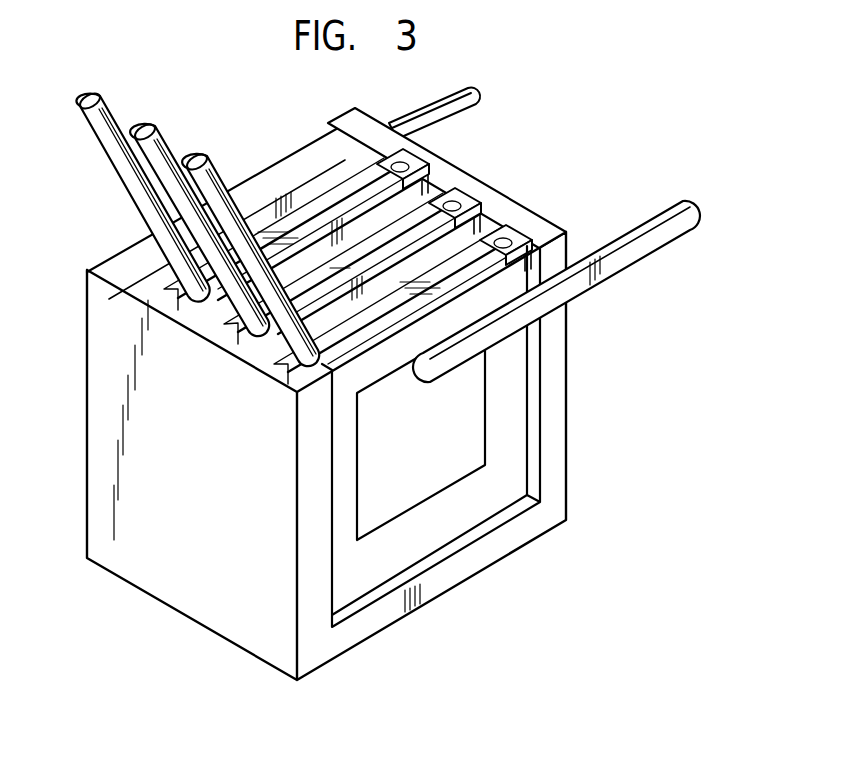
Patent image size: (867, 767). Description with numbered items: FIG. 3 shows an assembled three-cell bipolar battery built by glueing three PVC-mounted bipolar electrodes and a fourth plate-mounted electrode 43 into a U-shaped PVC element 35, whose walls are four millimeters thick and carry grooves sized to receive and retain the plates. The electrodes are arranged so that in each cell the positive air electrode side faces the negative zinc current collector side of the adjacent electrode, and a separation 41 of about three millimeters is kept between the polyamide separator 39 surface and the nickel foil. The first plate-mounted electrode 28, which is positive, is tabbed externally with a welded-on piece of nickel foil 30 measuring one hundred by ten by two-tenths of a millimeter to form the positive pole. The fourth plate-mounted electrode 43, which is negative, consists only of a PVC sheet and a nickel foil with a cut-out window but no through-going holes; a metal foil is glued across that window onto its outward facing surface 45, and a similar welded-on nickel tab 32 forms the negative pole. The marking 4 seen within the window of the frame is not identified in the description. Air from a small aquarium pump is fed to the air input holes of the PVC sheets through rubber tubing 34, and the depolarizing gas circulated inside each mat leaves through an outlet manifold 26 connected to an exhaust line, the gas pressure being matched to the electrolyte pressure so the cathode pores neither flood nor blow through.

The membrane 4 is at (425, 446).
The outlet manifold 26 is at (530, 227).
The first plate-mounted electrode 28 is at (515, 460).
The nickel foil 30 is at (682, 233).
The nickel tab 32 is at (481, 103).
The rubber tubing 34 is at (145, 203).
The U-shaped PVC element 35 is at (300, 482).
The polyamide separator 39 is at (480, 221).
The separation 41 is at (410, 193).
The fourth plate-mounted electrode 43 is at (303, 157).
The outward facing surface 45 is at (263, 172).